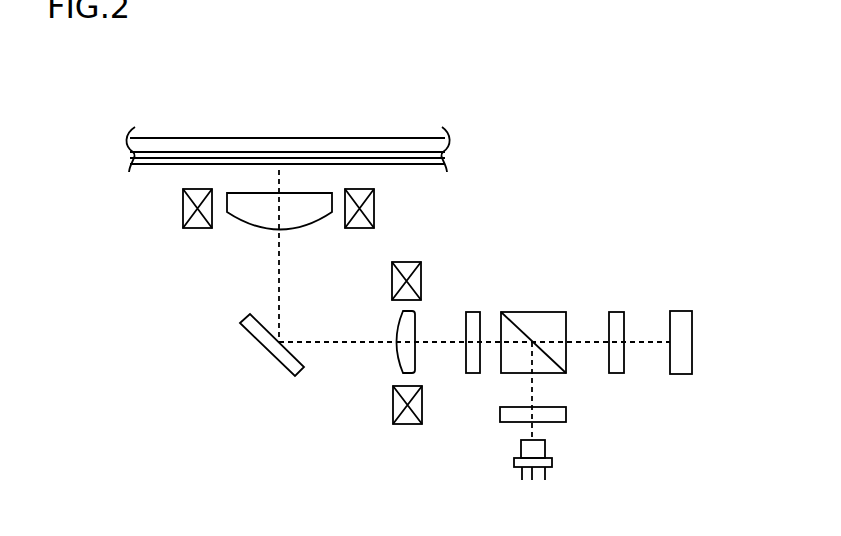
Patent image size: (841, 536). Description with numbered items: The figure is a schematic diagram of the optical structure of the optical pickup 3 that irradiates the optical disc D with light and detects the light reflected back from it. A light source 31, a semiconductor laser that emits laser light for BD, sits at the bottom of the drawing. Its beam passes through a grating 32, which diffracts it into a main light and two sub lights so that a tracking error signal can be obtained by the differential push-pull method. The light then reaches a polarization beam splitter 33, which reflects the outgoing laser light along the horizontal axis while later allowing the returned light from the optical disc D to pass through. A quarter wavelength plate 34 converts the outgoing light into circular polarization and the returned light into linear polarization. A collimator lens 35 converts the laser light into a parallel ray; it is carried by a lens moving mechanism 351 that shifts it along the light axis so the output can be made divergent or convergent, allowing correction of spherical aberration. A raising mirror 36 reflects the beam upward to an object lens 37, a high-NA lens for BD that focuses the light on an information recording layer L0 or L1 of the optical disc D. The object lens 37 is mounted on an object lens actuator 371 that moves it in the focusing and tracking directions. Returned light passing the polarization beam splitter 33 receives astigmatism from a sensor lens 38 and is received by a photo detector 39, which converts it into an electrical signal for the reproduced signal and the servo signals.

The optical pickup 3 is at (558, 192).
The optical disc D is at (253, 138).
The information recording layer L0 is at (162, 151).
The information recording layer L1 is at (382, 158).
The light source 31 is at (515, 467).
The grating 32 is at (567, 422).
The polarization beam splitter 33 is at (536, 312).
The quarter wavelength plate 34 is at (473, 312).
The collimator lens 35 is at (417, 322).
The lens moving mechanism 351 is at (395, 425).
The raising mirror 36 is at (275, 358).
The object lens 37 is at (267, 230).
The object lens actuator 371 is at (375, 217).
The sensor lens 38 is at (616, 312).
The photo detector 39 is at (683, 374).